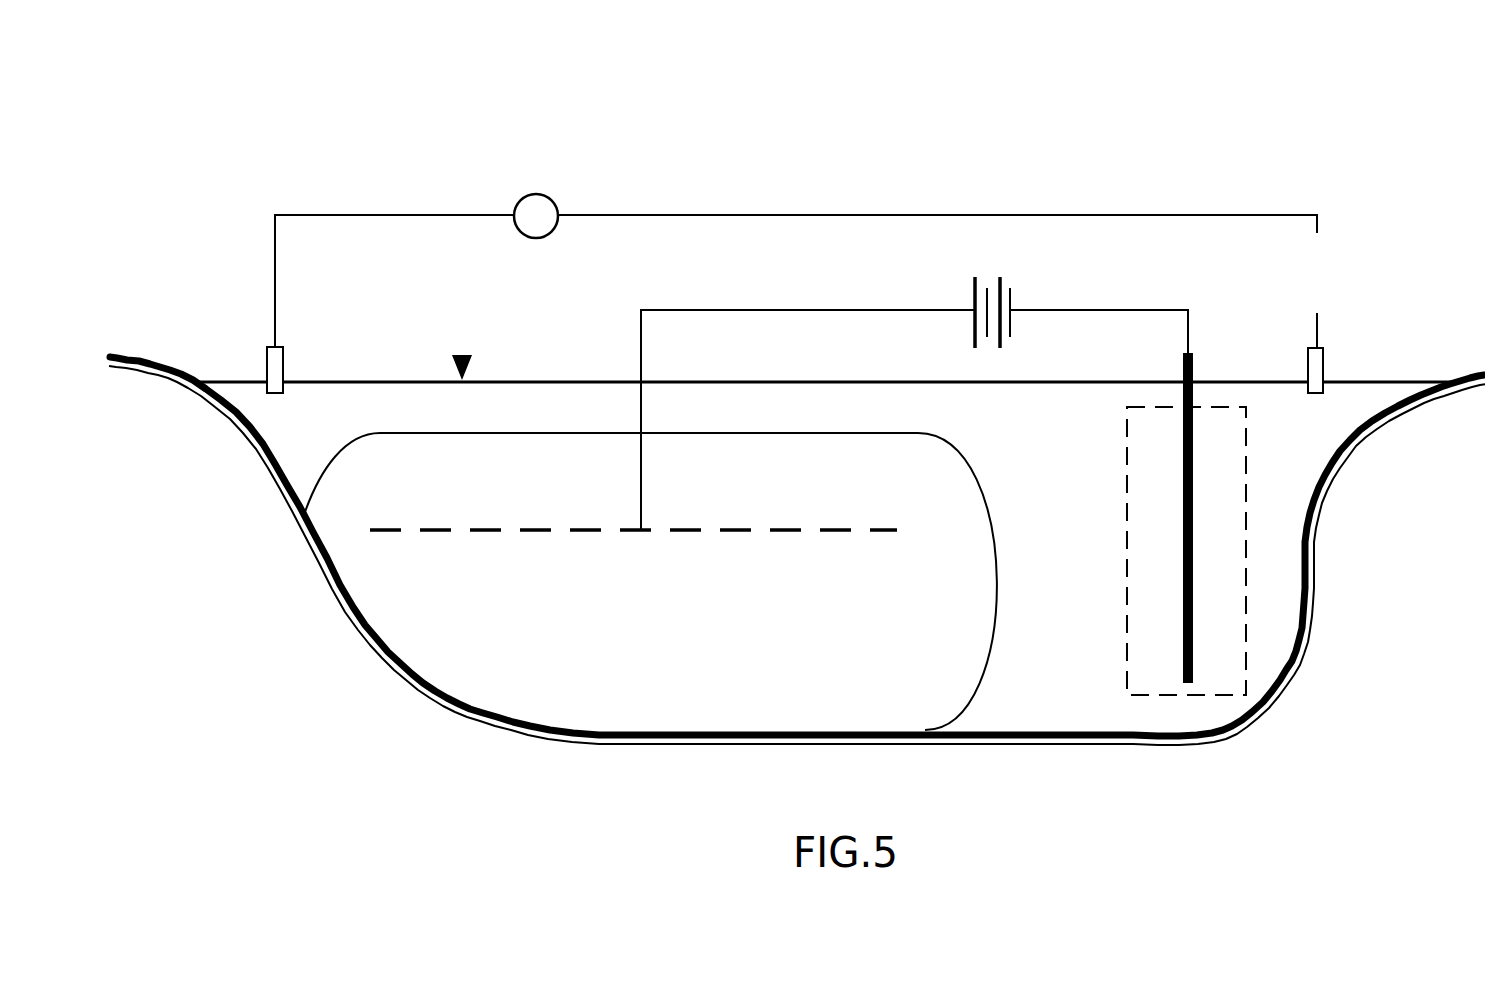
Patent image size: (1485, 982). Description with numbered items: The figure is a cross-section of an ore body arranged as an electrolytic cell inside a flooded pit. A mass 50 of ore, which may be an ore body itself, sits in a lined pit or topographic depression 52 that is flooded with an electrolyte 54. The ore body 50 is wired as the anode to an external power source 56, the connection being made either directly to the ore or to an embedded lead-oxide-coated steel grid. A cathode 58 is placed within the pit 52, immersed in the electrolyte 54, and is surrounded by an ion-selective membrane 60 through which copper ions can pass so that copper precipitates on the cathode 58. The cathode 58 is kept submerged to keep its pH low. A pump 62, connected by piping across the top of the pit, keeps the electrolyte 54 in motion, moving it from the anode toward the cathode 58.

The mass of ore 50 is at (671, 619).
The pit or topographic depression 52 is at (436, 708).
The electrolyte 54 is at (1076, 499).
The external power source 56 is at (1012, 298).
The cathode 58 is at (1211, 364).
The ion-selective membrane 60 is at (1112, 696).
The pump 62 is at (531, 194).